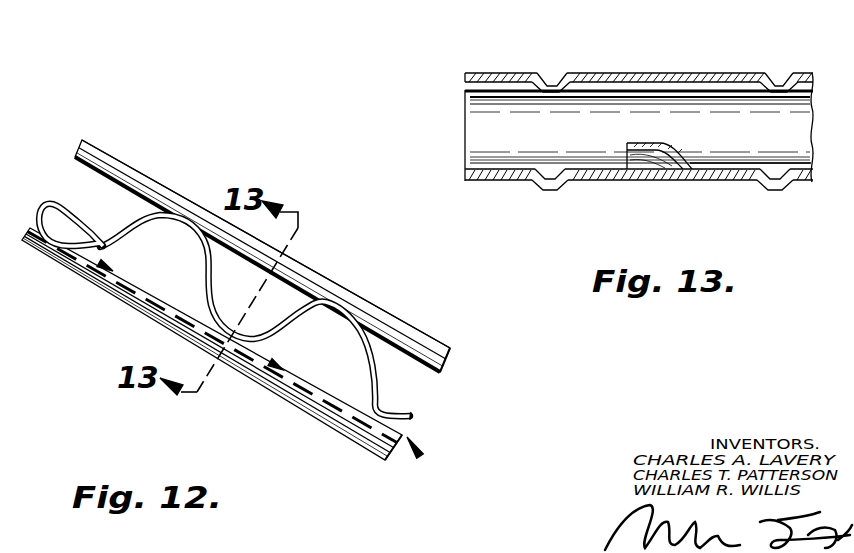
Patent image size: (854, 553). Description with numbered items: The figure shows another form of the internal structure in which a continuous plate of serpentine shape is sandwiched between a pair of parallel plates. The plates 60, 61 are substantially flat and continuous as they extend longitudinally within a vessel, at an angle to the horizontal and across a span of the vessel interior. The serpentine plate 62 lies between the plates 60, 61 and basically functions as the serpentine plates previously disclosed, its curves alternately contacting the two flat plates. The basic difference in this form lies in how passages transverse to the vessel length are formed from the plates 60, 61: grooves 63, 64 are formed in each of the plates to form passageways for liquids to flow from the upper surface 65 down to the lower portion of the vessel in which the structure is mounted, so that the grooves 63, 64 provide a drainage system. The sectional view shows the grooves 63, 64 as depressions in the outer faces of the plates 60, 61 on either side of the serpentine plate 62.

In FIG. 12, the plate 60 is at (115, 158).
In FIG. 13, the plate 60 is at (467, 73).
In FIG. 12, the plate 61 is at (340, 428).
In FIG. 13, the plate 61 is at (467, 177).
In FIG. 12, the serpentine plate 62 is at (374, 381).
In FIG. 13, the serpentine plate 62 is at (467, 117).
In FIG. 12, the groove 63 is at (433, 372).
In FIG. 13, the groove 63 is at (553, 73).
In FIG. 12, the groove 64 is at (380, 452).
In FIG. 13, the groove 64 is at (550, 188).
In FIG. 12, the upper surface 65 is at (311, 268).
In FIG. 13, the upper surface 65 is at (673, 73).